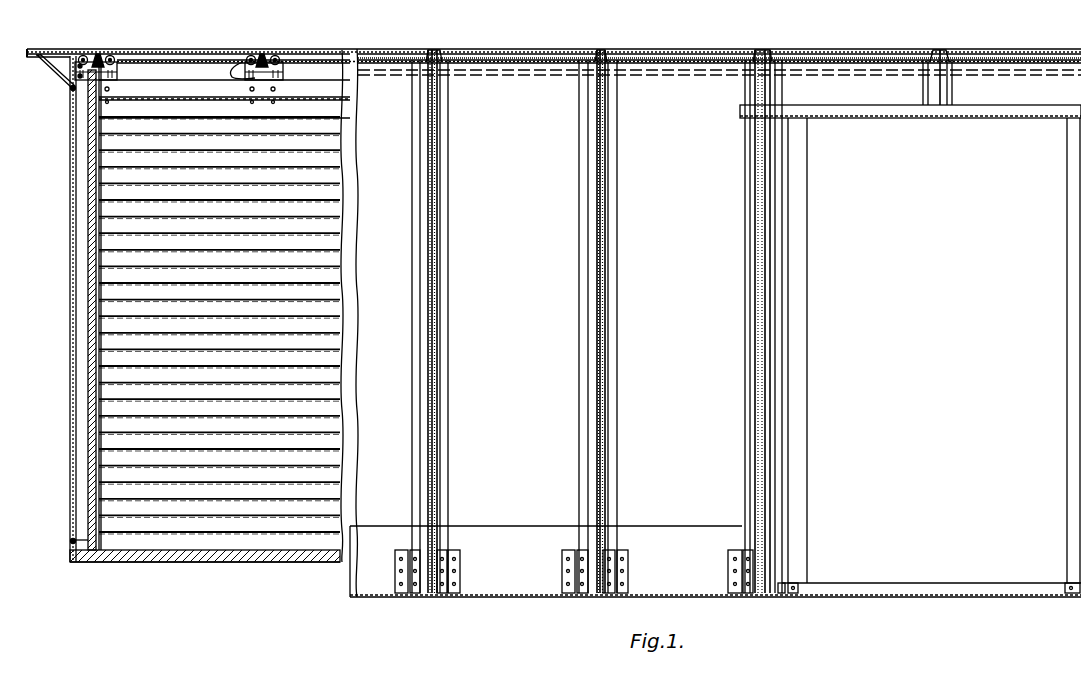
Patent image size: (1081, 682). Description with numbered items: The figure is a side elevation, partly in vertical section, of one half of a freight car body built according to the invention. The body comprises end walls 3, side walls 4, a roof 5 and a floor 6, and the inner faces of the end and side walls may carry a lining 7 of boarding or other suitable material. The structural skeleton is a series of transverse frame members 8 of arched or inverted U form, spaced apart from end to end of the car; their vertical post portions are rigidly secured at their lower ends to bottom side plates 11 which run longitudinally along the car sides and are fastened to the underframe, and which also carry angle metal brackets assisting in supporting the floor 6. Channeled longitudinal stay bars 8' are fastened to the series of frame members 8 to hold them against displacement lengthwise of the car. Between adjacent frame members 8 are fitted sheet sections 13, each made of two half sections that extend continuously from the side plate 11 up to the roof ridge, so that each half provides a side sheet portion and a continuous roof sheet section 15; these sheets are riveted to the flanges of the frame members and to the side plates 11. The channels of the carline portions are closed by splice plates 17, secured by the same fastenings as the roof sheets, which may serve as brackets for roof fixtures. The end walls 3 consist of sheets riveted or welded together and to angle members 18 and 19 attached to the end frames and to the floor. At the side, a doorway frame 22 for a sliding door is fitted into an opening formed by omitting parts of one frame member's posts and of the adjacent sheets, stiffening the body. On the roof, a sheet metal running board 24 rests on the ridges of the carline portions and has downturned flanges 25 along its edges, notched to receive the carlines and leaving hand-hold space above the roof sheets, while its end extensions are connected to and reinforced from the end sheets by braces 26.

The end wall 3 is at (70, 288).
The side wall 4 is at (440, 323).
The roof 5 is at (530, 60).
The floor 6 is at (292, 553).
The lining 7 is at (117, 177).
The frame member 8 is at (593, 302).
The longitudinal stay bar 8' is at (224, 68).
The bottom side plate 11 is at (518, 584).
The sheet section 13 is at (622, 432).
The roof sheet section 15 is at (478, 62).
The splice plate 17 is at (240, 60).
The angle member 18 is at (75, 56).
The angle member 19 is at (76, 540).
The doorway frame 22 is at (806, 247).
The running board 24 is at (150, 45).
The downturned flange 25 is at (668, 57).
The brace 26 is at (53, 65).